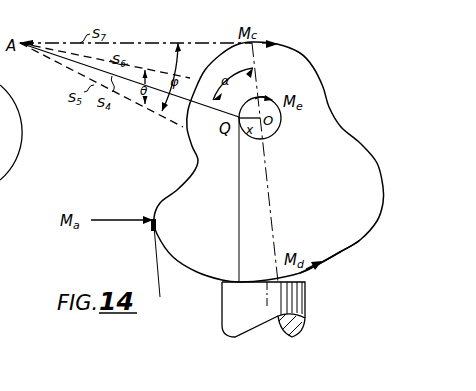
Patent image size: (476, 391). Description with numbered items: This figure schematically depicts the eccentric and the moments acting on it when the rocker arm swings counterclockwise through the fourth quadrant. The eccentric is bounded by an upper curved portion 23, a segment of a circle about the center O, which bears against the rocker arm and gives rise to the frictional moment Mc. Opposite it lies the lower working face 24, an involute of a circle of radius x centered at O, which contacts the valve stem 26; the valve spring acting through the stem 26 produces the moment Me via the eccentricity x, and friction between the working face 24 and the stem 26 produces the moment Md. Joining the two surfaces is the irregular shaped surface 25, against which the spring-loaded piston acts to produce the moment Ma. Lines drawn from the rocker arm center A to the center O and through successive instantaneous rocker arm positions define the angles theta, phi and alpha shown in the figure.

The upper curved portion 23 is at (322, 72).
The working face 24 is at (343, 251).
The irregular shaped surface 25 is at (158, 228).
The valve stem 26 is at (222, 310).